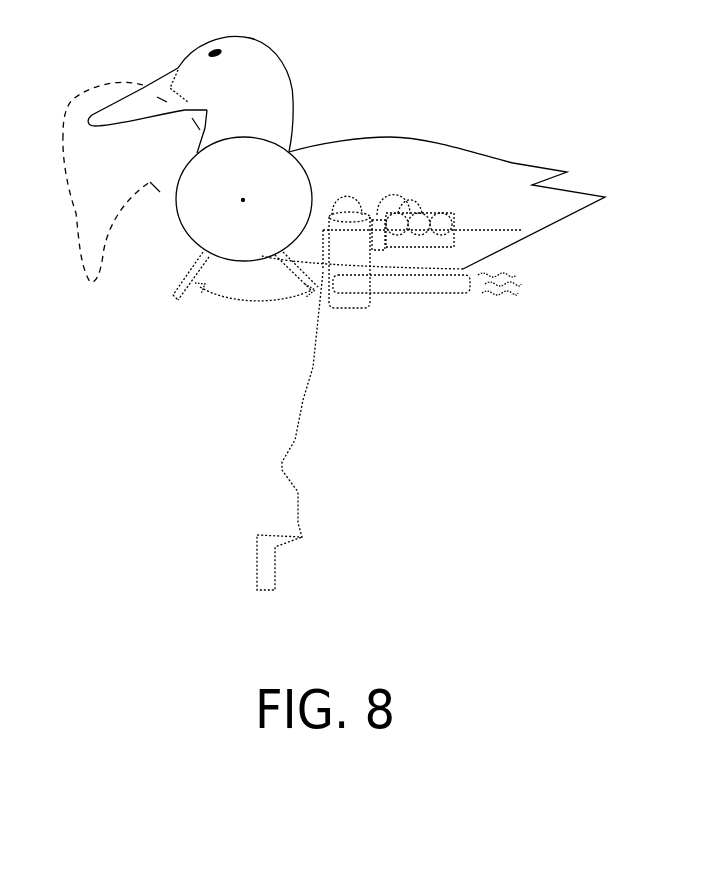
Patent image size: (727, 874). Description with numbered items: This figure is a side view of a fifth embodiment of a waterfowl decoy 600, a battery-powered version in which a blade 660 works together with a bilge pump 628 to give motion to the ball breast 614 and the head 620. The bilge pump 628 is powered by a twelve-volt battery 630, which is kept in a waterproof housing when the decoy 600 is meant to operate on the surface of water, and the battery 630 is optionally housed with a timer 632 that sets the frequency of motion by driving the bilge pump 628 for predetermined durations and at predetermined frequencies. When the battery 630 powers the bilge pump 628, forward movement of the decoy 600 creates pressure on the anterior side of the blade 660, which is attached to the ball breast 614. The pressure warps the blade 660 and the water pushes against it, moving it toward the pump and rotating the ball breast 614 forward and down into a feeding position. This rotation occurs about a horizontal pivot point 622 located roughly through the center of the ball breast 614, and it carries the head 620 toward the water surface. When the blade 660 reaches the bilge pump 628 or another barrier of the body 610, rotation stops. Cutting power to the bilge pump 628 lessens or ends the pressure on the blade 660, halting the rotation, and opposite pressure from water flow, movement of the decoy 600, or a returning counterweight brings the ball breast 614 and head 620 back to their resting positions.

The waterfowl decoy 600 is at (505, 116).
The body 610 is at (398, 221).
The ball breast 614 is at (195, 222).
The head 620 is at (268, 87).
The horizontal pivot point 622 is at (242, 200).
The bilge pump 628 is at (345, 258).
The battery 630 is at (447, 222).
The timer 632 is at (380, 222).
The blade 660 is at (183, 292).